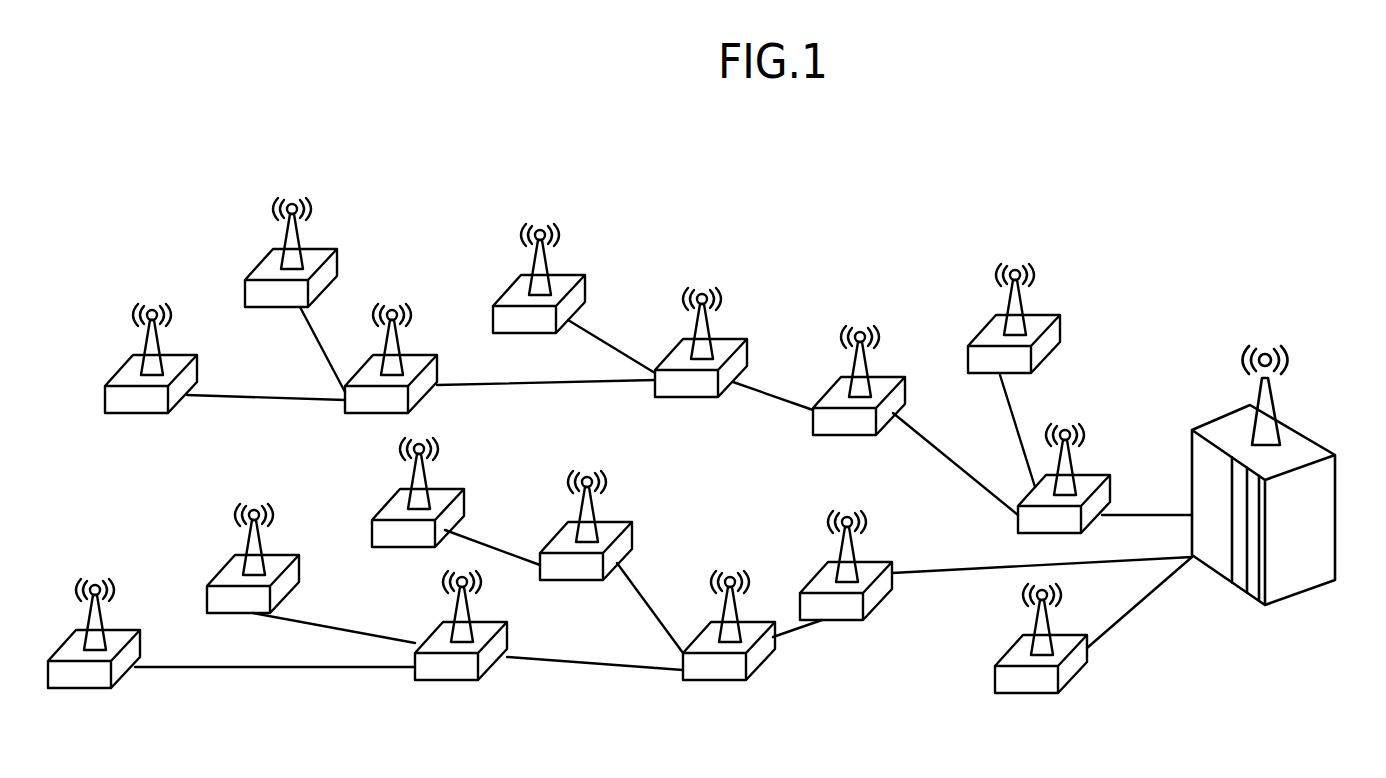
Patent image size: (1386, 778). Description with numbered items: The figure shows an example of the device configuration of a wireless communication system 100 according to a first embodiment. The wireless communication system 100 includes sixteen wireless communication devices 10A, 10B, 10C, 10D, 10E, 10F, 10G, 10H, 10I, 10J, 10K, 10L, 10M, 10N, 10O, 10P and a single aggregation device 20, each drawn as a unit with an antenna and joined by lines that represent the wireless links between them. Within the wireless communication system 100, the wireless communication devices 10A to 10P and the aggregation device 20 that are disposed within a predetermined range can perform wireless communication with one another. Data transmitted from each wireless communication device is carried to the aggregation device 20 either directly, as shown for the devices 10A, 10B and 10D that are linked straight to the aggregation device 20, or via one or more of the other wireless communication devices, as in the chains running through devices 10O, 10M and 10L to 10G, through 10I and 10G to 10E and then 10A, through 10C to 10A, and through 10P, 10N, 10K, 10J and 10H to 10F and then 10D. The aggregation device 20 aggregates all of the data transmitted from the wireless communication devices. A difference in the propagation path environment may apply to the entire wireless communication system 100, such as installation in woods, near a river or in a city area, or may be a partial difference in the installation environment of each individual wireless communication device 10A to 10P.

The wireless communication device 10A is at (1100, 475).
The wireless communication device 10B is at (1023, 697).
The wireless communication device 10C is at (1050, 315).
The wireless communication device 10D is at (878, 605).
The wireless communication device 10E is at (895, 377).
The wireless communication device 10F is at (710, 682).
The wireless communication device 10G is at (737, 339).
The wireless communication device 10H is at (622, 522).
The wireless communication device 10I is at (575, 275).
The wireless communication device 10J is at (507, 622).
The wireless communication device 10K is at (454, 489).
The wireless communication device 10L is at (427, 355).
The wireless communication device 10M is at (327, 249).
The wireless communication device 10N is at (289, 555).
The wireless communication device 10O is at (187, 355).
The wireless communication device 10P is at (130, 630).
The aggregation device 20 is at (1313, 433).
The wireless communication system 100 is at (1150, 253).